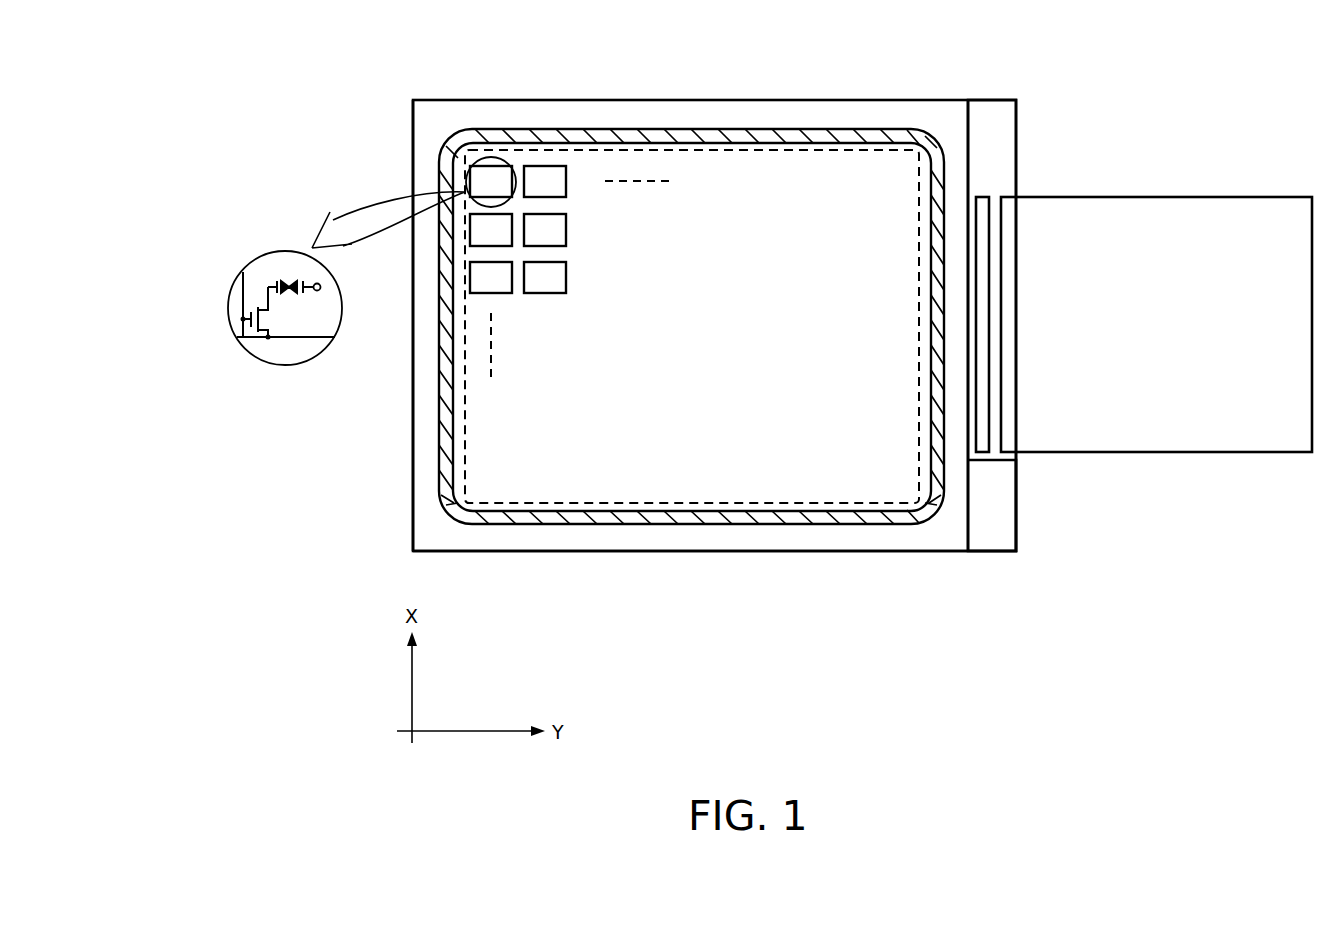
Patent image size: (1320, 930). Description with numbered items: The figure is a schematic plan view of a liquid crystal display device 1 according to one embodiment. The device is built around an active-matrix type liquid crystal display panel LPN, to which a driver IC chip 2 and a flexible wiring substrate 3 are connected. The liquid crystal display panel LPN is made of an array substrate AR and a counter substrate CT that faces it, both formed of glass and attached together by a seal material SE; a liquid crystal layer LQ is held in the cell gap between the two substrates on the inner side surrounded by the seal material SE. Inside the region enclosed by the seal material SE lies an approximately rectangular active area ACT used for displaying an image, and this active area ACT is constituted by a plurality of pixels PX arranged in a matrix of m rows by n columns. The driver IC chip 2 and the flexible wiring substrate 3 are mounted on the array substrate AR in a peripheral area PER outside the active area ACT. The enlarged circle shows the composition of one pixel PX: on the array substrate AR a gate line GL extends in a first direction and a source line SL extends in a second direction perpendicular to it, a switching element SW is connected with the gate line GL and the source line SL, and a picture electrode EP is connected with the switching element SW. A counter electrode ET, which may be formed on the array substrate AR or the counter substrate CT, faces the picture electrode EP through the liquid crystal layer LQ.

The liquid crystal display device 1 is at (1025, 85).
The driver IC chip 2 is at (980, 197).
The flexible wiring substrate 3 is at (1163, 197).
The pixel PX is at (494, 157).
The seal material SE is at (740, 129).
The active area ACT is at (790, 503).
The peripheral area PER is at (414, 393).
The gate line GL is at (238, 291).
The source line SL is at (298, 339).
The switching element SW is at (273, 316).
The picture electrode EP is at (268, 283).
The liquid crystal layer LQ is at (286, 272).
The counter electrode ET is at (337, 289).
The counter substrate CT is at (932, 548).
The liquid crystal display panel LPN is at (998, 552).
The array substrate AR is at (1007, 527).